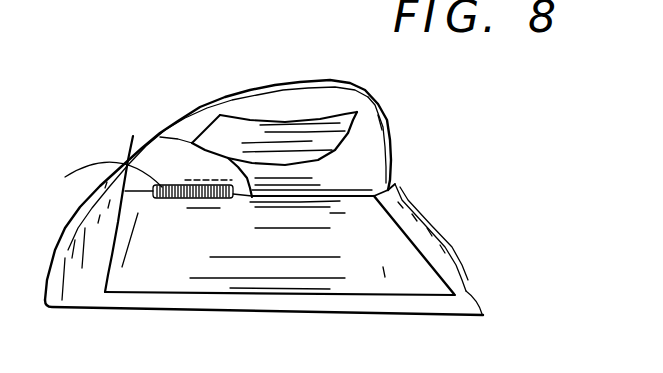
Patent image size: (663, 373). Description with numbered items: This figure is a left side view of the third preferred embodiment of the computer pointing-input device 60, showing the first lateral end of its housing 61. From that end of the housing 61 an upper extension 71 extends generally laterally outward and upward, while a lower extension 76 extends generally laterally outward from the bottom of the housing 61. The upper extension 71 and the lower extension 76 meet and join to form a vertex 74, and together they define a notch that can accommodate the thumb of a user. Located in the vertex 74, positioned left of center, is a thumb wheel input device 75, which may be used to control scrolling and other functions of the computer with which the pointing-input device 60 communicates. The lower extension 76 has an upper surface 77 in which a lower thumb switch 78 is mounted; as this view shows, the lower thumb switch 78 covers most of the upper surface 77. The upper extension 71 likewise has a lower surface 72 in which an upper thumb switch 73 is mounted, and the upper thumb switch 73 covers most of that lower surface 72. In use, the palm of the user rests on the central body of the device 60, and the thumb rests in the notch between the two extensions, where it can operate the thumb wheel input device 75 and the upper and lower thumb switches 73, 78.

The computer pointing-input device 60 is at (449, 199).
The housing 61 is at (496, 232).
The upper extension 71 is at (305, 78).
The lower surface 72 is at (390, 149).
The upper thumb switch 73 is at (347, 127).
The vertex 74 is at (160, 137).
The thumb wheel input device 75 is at (95, 180).
The lower extension 76 is at (463, 287).
The upper surface 77 is at (137, 302).
The lower thumb switch 78 is at (250, 252).